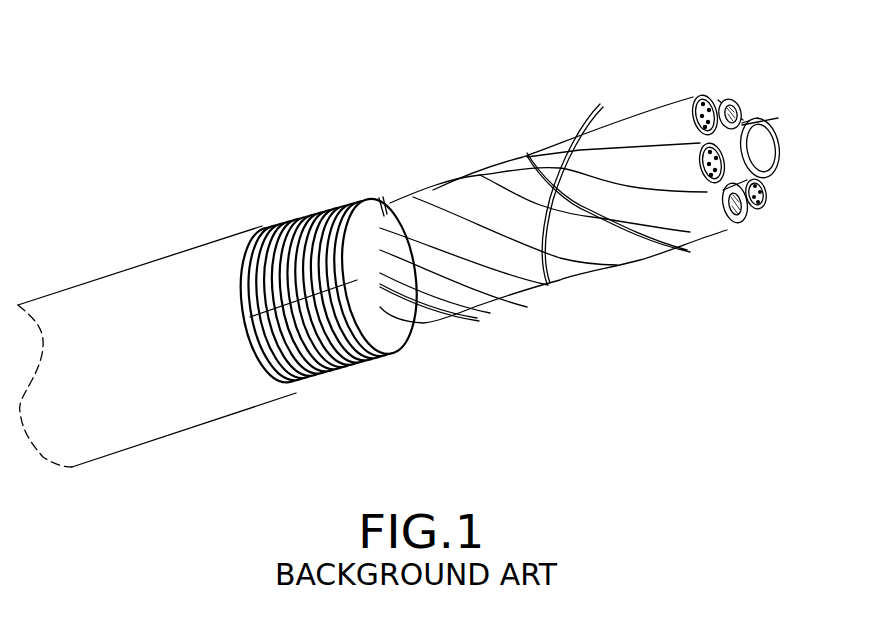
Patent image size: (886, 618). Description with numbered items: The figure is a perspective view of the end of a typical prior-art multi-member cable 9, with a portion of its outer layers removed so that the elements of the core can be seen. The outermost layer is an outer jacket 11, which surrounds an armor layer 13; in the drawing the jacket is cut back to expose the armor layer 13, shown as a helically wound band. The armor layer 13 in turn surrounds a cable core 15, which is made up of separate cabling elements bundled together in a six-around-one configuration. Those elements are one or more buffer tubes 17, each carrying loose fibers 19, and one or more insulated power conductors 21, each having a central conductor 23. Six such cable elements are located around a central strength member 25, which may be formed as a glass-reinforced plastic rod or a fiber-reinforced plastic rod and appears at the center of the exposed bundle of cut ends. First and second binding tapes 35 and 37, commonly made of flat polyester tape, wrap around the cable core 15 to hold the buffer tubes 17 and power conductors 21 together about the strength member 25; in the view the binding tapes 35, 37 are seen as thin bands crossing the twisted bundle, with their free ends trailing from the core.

The multi-member cable 9 is at (76, 235).
The outer jacket 11 is at (100, 377).
The armor layer 13 is at (300, 218).
The cable core 15 is at (476, 128).
The buffer tube 17 is at (663, 112).
The loose fibers 19 is at (710, 98).
The insulated power conductor 21 is at (718, 98).
The central conductor 23 is at (735, 110).
The central strength member 25 is at (758, 145).
The first binding tape 35 is at (475, 322).
The second binding tape 37 is at (378, 198).